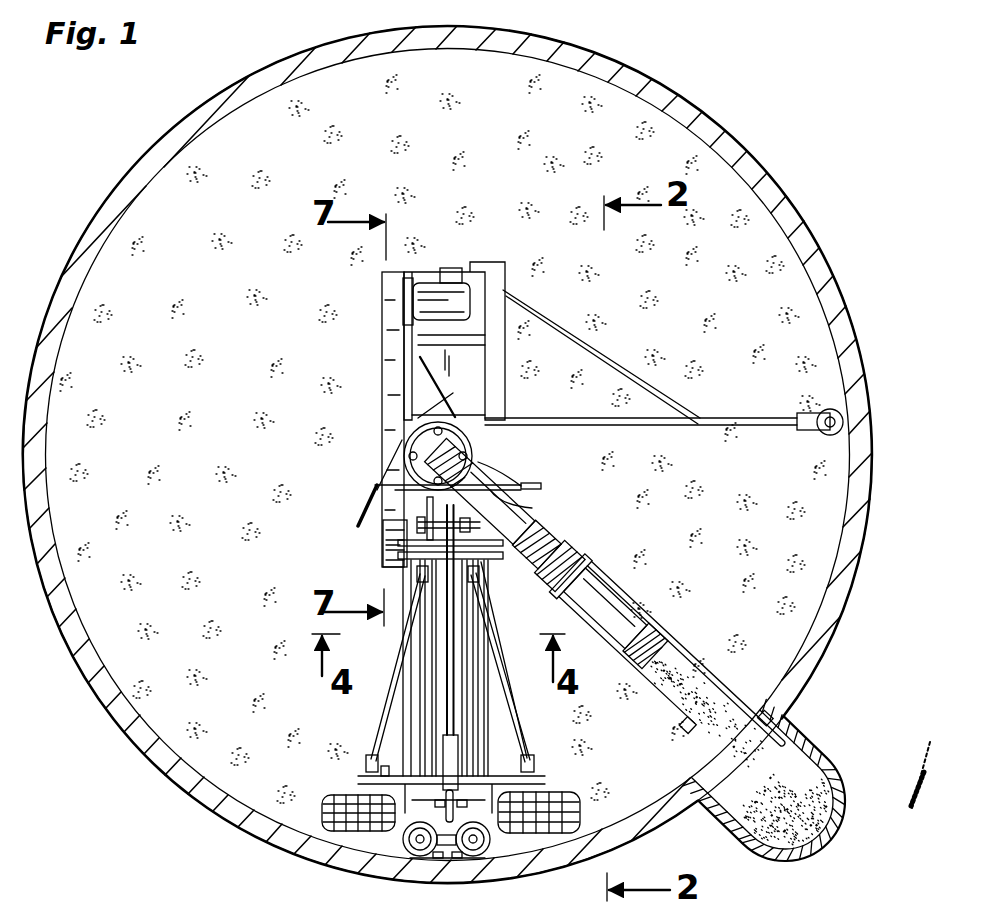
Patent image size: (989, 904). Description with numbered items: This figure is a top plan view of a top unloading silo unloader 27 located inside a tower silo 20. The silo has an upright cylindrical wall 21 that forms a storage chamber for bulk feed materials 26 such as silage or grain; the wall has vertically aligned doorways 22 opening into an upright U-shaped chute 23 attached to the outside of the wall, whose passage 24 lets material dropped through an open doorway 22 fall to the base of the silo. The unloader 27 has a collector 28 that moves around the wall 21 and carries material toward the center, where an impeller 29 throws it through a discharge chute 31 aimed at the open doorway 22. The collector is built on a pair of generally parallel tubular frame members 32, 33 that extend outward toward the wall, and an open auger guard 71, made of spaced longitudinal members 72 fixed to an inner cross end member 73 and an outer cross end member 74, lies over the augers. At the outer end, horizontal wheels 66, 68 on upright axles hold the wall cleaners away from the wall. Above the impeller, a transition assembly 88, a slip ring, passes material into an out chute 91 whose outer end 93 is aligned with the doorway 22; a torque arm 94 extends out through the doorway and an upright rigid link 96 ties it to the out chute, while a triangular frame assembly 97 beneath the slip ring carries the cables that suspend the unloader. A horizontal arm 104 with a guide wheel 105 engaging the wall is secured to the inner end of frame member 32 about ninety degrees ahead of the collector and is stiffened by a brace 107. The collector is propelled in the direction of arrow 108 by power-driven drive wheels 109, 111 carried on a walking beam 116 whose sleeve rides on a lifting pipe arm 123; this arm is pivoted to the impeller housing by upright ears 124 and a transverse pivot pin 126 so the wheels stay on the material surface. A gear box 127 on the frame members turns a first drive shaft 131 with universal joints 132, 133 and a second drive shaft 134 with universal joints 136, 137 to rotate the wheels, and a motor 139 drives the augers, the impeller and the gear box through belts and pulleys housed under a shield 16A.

The shield 16A is at (389, 338).
The tower silo 20 is at (790, 181).
The upright cylindrical wall 21 is at (823, 274).
The doorway 22 is at (683, 745).
The chute 23 is at (792, 827).
The upright passage 24 is at (778, 799).
The bulk feed materials 26 is at (443, 439).
The top unloading silo unloader 27 is at (546, 538).
The collector 28 is at (372, 714).
The impeller 29 is at (402, 543).
The discharge chute 31 is at (600, 607).
The frame member 32 is at (470, 702).
The frame member 33 is at (400, 702).
The horizontal wheel 66 is at (492, 841).
The horizontal wheel 68 is at (401, 841).
The open auger guard 71 is at (476, 648).
The longitudinal members 72 is at (430, 634).
The cross end member 73 is at (542, 528).
The cross end member 74 is at (451, 782).
The transition assembly 88 is at (478, 428).
The out chute 91 is at (472, 476).
The outer end 93 is at (641, 615).
The torque arm 94 is at (690, 651).
The upright rigid link 96 is at (582, 556).
The triangular frame assembly 97 is at (366, 497).
The horizontal arm 104 is at (744, 418).
The guide wheel 105 is at (832, 409).
The brace 107 is at (563, 330).
The arrow 108 is at (558, 722).
The drive wheel 109 is at (582, 792).
The drive wheel 111 is at (322, 797).
The walking beam 116 is at (386, 774).
The lifting pipe arm 123 is at (458, 692).
The upright ears 124 is at (394, 529).
The transverse pivot pin 126 is at (436, 534).
The gear box 127 is at (532, 508).
The first drive shaft 131 is at (500, 719).
The universal joint 132 is at (536, 764).
The universal joint 133 is at (483, 563).
The second drive shaft 134 is at (440, 672).
The universal joint 136 is at (419, 571).
The universal joint 137 is at (368, 762).
The motor 139 is at (436, 290).